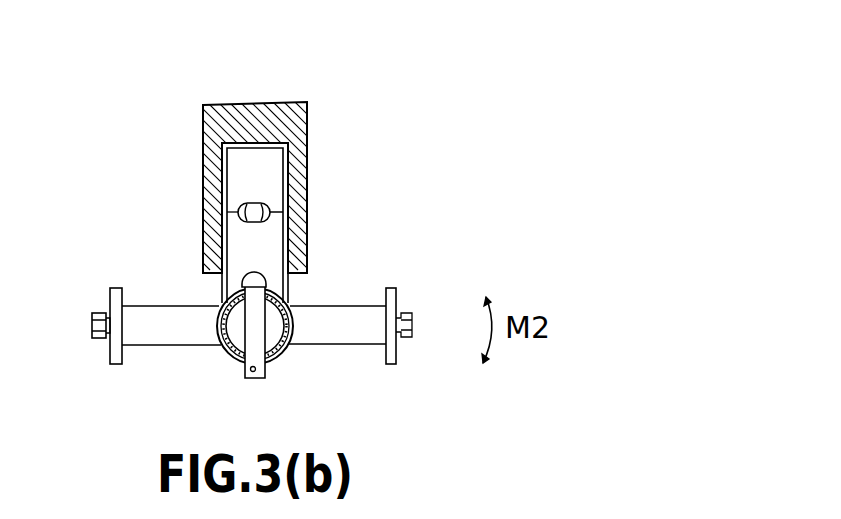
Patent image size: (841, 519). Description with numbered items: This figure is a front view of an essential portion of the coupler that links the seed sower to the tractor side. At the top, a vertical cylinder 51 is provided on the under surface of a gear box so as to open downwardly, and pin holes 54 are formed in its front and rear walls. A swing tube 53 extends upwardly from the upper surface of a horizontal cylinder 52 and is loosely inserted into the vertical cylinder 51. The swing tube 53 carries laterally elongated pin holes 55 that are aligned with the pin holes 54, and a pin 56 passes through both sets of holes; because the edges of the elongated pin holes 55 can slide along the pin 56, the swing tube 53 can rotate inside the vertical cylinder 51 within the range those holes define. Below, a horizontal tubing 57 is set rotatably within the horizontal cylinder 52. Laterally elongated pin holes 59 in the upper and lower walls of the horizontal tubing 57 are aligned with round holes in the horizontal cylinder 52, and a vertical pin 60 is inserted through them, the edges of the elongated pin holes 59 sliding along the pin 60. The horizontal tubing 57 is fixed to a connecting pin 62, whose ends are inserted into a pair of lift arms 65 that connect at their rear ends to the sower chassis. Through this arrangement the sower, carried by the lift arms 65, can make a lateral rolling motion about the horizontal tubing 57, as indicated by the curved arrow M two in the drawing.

The vertical cylinder 51 is at (302, 120).
The horizontal cylinder 52 is at (285, 348).
The swing tube 53 is at (287, 198).
The pin holes 54 is at (240, 213).
The laterally elongated pin holes 55 is at (239, 206).
The pin 56 is at (271, 213).
The horizontal tubing 57 is at (220, 310).
The laterally elongated pin holes 59 is at (243, 357).
The vertical pin 60 is at (257, 324).
The connecting pin 62 is at (151, 338).
The lift arms 65 is at (108, 362).